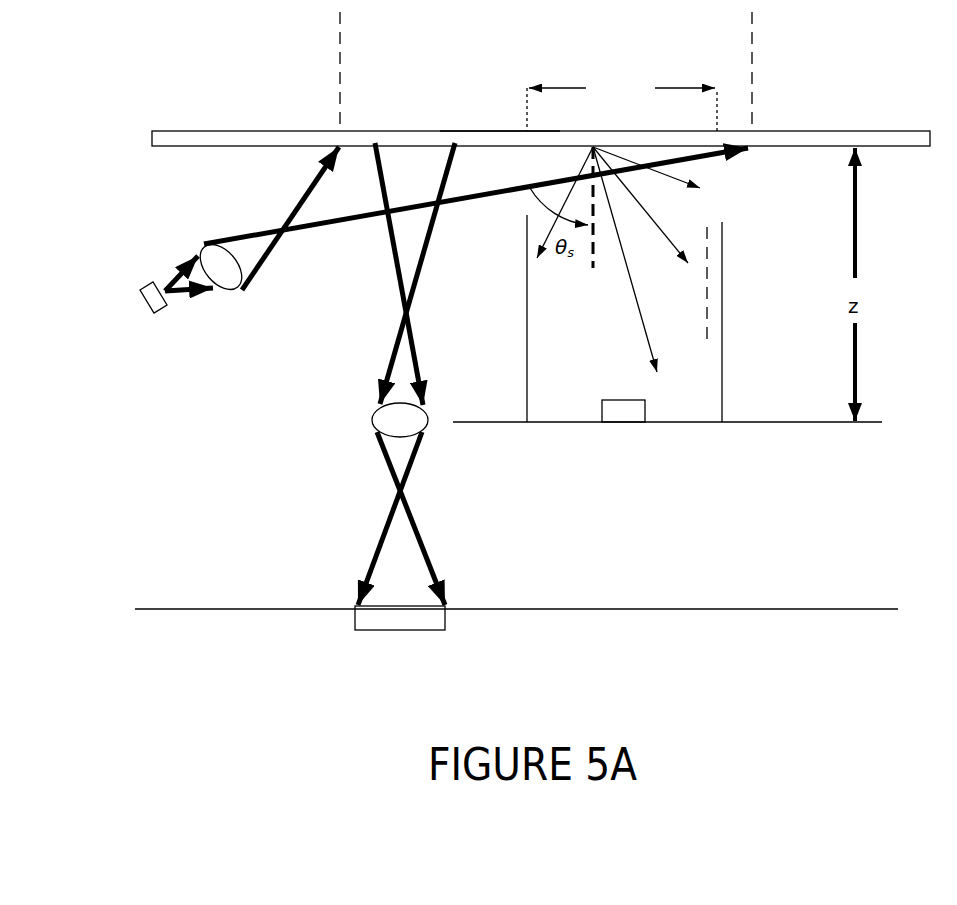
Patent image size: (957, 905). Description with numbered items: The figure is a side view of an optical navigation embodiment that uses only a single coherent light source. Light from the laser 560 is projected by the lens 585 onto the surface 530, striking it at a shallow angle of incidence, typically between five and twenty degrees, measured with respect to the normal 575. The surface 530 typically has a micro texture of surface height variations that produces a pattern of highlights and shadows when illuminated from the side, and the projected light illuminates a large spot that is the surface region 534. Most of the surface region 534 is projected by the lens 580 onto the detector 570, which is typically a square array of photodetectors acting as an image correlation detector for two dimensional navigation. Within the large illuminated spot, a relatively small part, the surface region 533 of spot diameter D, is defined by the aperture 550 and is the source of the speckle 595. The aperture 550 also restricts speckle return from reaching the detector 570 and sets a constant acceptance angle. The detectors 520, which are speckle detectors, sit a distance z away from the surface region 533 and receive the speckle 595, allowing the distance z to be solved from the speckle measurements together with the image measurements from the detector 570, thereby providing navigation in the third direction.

The surface 530 is at (912, 130).
The surface region 534 is at (491, 118).
The surface region 533 is at (640, 130).
The laser 560 is at (140, 296).
The lens 585 is at (207, 247).
The lens 580 is at (372, 420).
The detector 570 is at (360, 618).
The normal 575 is at (593, 266).
The speckle 595 is at (642, 330).
The aperture 550 is at (722, 310).
The detectors 520 is at (618, 415).